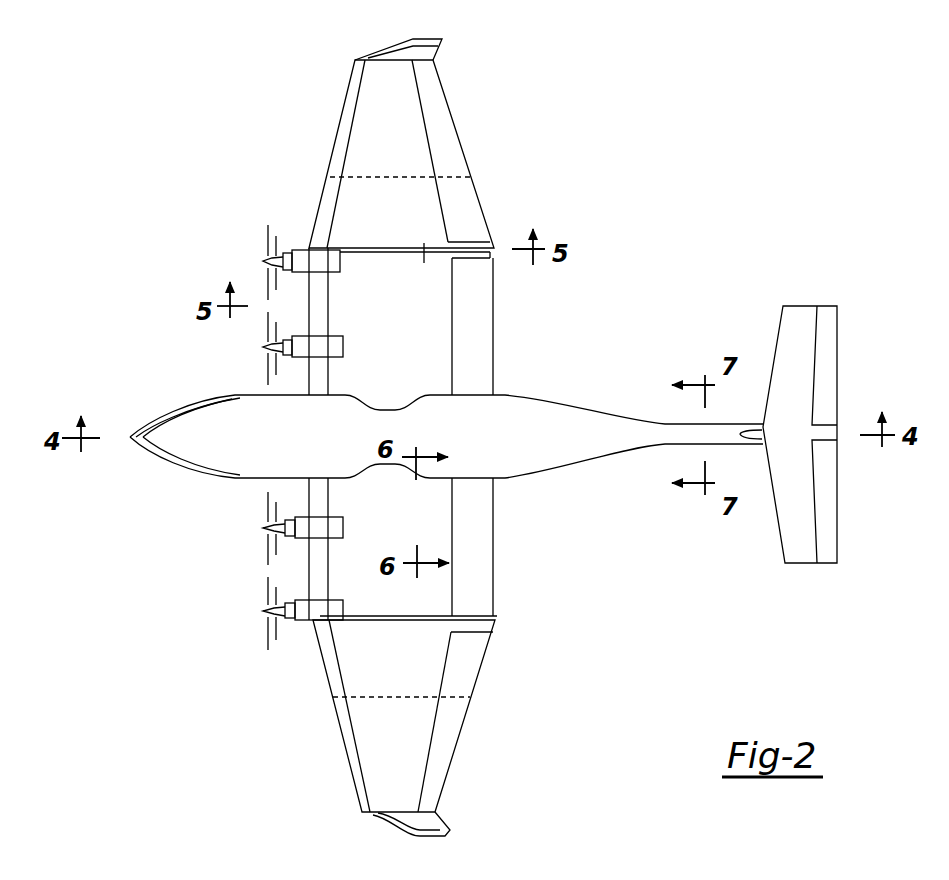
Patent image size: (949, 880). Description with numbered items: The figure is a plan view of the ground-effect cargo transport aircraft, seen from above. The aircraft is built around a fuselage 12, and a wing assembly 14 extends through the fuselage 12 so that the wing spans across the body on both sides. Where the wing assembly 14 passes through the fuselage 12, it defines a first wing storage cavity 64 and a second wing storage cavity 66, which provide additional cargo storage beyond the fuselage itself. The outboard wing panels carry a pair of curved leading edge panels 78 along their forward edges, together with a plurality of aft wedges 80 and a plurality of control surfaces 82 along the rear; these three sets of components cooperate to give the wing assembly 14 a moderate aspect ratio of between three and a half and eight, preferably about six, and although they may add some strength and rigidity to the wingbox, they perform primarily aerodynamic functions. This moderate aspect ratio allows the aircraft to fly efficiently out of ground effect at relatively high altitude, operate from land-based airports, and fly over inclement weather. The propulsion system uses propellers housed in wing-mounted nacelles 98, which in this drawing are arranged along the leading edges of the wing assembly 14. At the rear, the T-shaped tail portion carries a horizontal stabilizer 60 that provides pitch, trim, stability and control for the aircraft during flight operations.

The fuselage 12 is at (567, 390).
The wing assembly 14 is at (430, 605).
The horizontal stabilizer 60 is at (798, 320).
The first wing storage cavity 64 is at (386, 322).
The second wing storage cavity 66 is at (432, 520).
The curved leading edge panel 78 is at (320, 379).
The aft wedge 80 is at (490, 257).
The control surface 82 is at (487, 345).
The nacelle 98 is at (332, 525).